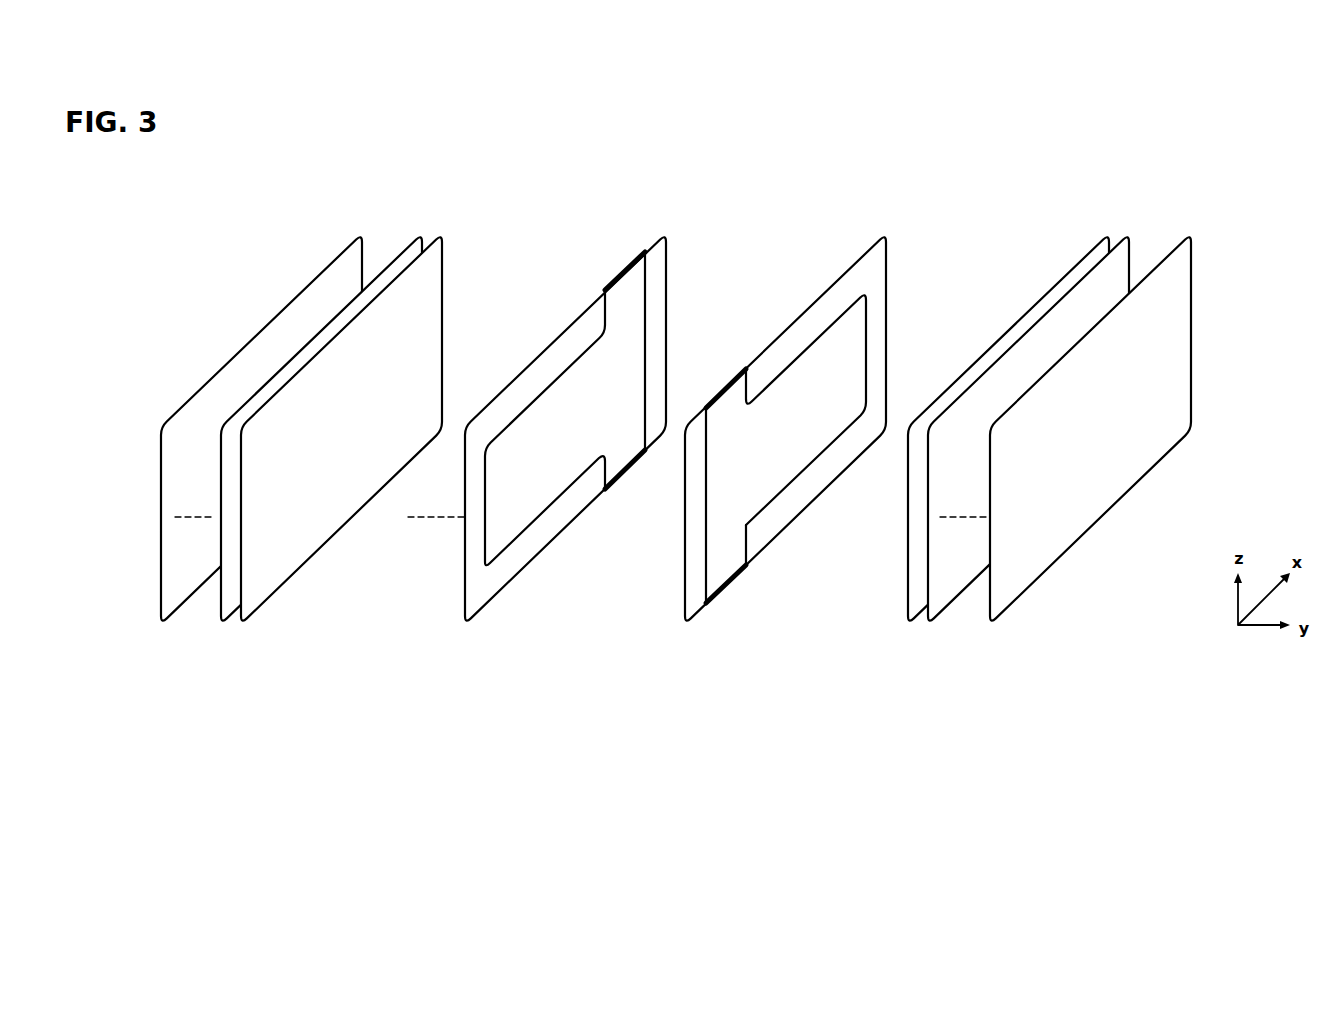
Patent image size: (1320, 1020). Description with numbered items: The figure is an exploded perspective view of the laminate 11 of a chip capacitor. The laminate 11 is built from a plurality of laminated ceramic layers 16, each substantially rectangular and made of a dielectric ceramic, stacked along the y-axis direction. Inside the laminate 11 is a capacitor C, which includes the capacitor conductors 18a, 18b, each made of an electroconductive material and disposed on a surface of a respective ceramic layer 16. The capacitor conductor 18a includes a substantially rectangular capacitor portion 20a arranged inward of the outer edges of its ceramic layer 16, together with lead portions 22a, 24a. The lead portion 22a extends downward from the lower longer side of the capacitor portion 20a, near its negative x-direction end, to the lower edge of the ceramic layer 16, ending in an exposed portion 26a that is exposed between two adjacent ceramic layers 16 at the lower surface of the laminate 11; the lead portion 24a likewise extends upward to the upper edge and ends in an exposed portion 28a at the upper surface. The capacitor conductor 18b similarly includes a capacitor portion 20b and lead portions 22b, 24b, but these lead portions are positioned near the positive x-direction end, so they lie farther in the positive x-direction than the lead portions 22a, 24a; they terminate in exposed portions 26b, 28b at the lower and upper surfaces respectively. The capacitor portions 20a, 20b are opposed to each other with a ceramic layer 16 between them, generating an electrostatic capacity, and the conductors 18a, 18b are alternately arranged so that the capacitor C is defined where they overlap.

The laminate 11 is at (230, 133).
The ceramic layer 16 is at (355, 237).
The capacitor conductor 18a is at (820, 447).
The capacitor conductor 18b is at (579, 409).
The capacitor portion 20a is at (853, 340).
The capacitor portion 20b is at (518, 447).
The lead portion 22a is at (723, 570).
The lead portion 22b is at (618, 462).
The lead portion 24a is at (723, 400).
The lead portion 24b is at (618, 295).
The exposed portion 26a is at (737, 590).
The exposed portion 26b is at (635, 467).
The exposed portion 28a is at (740, 368).
The exposed portion 28b is at (627, 255).
The capacitor C is at (717, 248).